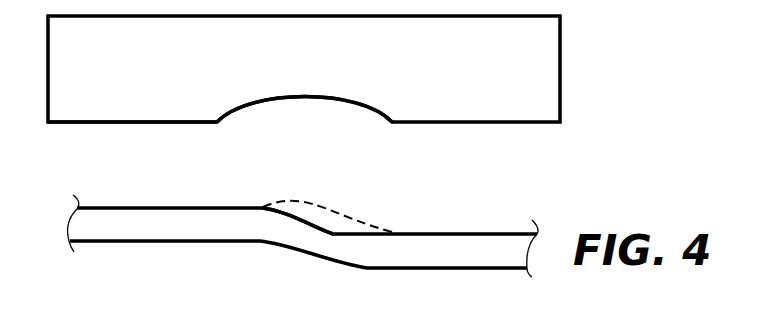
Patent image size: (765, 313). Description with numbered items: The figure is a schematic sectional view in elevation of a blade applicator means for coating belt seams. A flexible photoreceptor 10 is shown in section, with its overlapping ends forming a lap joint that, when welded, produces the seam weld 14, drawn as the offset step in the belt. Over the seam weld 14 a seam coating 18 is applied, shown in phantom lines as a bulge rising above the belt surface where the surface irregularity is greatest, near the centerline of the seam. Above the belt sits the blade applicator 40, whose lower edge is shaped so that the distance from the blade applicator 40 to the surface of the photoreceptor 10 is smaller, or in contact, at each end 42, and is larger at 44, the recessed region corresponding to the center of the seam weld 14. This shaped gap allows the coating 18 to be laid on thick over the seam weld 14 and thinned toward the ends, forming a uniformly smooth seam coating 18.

The flexible photoreceptor 10 is at (123, 248).
The seam weld 14 is at (304, 224).
The seam coating 18 is at (340, 210).
The blade applicator 40 is at (458, 137).
The end of the blade applicator 42 is at (91, 123).
The center portion of the blade applicator 44 is at (307, 101).